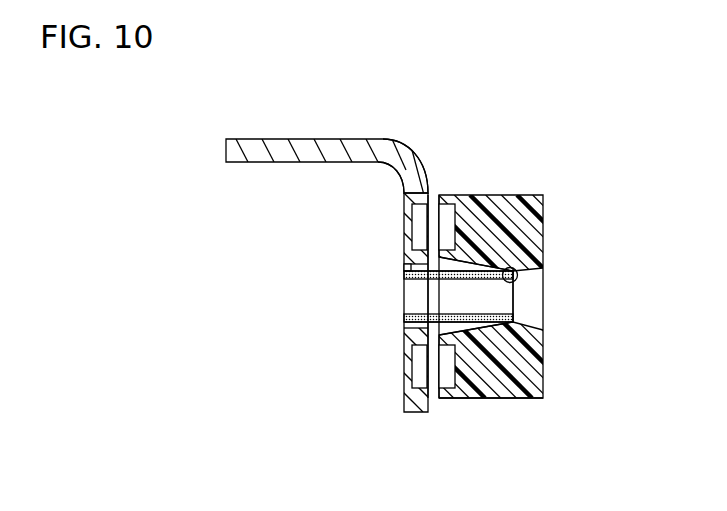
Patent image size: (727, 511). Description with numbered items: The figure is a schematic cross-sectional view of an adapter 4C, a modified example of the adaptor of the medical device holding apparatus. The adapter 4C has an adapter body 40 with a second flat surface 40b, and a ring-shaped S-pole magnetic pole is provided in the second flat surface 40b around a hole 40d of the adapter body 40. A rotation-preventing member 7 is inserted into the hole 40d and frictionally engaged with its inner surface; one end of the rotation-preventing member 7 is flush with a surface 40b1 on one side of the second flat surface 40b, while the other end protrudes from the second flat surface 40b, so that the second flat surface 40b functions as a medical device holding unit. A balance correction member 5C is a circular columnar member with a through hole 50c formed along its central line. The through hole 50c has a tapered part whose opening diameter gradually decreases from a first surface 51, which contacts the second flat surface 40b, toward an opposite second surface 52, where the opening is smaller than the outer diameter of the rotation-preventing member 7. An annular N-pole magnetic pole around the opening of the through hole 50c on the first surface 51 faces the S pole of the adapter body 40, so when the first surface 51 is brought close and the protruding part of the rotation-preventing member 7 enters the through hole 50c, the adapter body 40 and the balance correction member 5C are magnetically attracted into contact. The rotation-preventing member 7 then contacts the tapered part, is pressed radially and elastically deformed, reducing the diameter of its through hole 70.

The adapter 4C is at (290, 139).
The adapter body 40 is at (413, 283).
The second flat surface 40b is at (405, 412).
The surface 40b1 is at (403, 187).
The hole 40d is at (407, 268).
The first surface 51 is at (432, 390).
The second surface 52 is at (481, 301).
The through hole 50c is at (504, 269).
The balance correction member 5C is at (523, 399).
The rotation-preventing member 7 is at (429, 288).
The through hole 70 is at (427, 280).